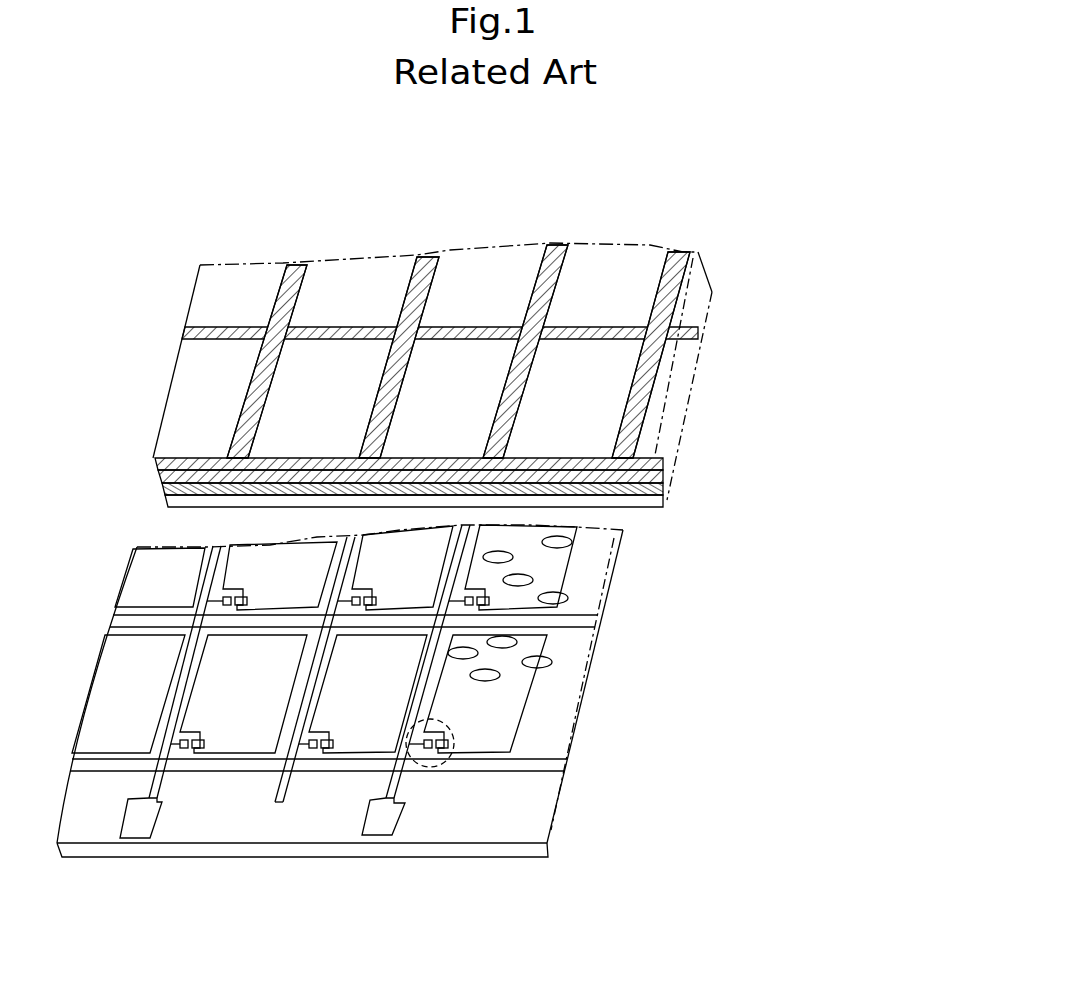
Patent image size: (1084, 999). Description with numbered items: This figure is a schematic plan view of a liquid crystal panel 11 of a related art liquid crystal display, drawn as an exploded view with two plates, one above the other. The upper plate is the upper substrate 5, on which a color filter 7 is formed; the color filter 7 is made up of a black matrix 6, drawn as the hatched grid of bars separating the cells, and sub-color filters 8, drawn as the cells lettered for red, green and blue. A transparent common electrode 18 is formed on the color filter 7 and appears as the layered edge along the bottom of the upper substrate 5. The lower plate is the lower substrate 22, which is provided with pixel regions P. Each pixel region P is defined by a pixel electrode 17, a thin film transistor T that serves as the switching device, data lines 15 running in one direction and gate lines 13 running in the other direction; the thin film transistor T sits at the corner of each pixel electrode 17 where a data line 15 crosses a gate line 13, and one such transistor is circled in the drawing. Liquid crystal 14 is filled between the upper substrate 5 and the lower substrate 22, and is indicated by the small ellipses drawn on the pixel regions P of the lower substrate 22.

The upper substrate 5 is at (500, 387).
The black matrix 6 is at (698, 334).
The color filter 7 is at (494, 351).
The sub-color filters 8 is at (642, 298).
The transparent common electrode 18 is at (665, 497).
The liquid crystal panel 11 is at (512, 713).
The lower substrate 22 is at (693, 726).
The gate lines 13 is at (522, 767).
The liquid crystal 14 is at (555, 584).
The data lines 15 is at (385, 793).
The pixel electrodes 17 is at (518, 733).
The pixel regions P is at (556, 690).
The thin film transistors T is at (445, 763).